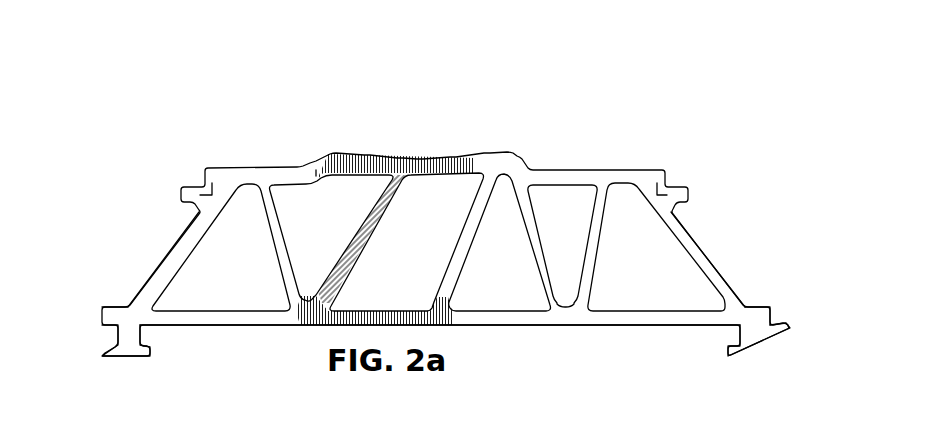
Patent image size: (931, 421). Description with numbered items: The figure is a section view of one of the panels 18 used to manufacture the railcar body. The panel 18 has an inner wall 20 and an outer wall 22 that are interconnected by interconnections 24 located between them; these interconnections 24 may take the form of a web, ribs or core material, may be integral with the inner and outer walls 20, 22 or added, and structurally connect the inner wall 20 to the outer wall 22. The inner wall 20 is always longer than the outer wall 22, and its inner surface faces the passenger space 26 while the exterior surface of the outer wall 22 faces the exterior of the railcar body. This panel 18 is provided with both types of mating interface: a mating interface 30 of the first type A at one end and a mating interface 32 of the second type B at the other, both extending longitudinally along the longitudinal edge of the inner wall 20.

The panel 18 is at (366, 111).
The inner wall 20 is at (496, 318).
The outer wall 22 is at (280, 166).
The interconnections 24 is at (598, 219).
The passenger space 26 is at (103, 302).
The mating interface 30 is at (790, 331).
The mating interface 32 is at (101, 350).